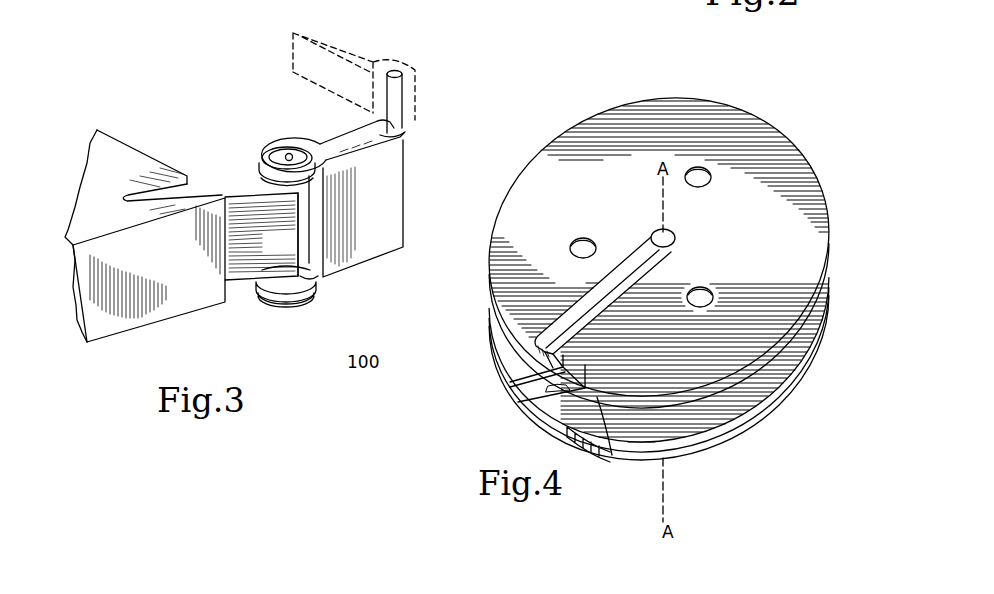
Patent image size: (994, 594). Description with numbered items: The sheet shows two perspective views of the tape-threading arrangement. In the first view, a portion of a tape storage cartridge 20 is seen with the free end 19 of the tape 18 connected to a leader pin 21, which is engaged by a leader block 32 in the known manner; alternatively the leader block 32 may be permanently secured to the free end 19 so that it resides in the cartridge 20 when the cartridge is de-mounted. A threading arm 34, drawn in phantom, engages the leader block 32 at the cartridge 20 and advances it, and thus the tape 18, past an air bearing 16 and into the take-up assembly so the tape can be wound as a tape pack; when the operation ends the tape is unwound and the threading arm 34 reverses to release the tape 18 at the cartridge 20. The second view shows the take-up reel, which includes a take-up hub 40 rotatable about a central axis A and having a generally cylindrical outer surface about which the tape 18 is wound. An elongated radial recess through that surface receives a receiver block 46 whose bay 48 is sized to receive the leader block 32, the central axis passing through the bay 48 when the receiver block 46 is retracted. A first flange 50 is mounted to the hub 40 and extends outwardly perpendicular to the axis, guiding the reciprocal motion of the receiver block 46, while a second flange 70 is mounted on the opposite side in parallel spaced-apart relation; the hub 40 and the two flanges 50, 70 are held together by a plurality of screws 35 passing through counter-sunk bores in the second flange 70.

In FIG. 3, the cartridge 20 is at (197, 266).
In FIG. 3, the tape 18 is at (289, 255).
In FIG. 3, the free end of tape 19 is at (265, 293).
In FIG. 3, the leader pin 21 is at (290, 152).
In FIG. 3, the leader block 32 is at (374, 201).
In FIG. 3, the threading arm 34 is at (347, 43).
In FIG. 4, the second flange 70 is at (732, 132).
In FIG. 4, the first flange 50 is at (717, 410).
In FIG. 4, the take-up hub 40 is at (613, 450).
In FIG. 4, the screws 35 is at (578, 238).
In FIG. 4, the air bearing 16 is at (633, 260).
In FIG. 4, the receiver block 46 is at (565, 375).
In FIG. 4, the bay 48 is at (645, 273).